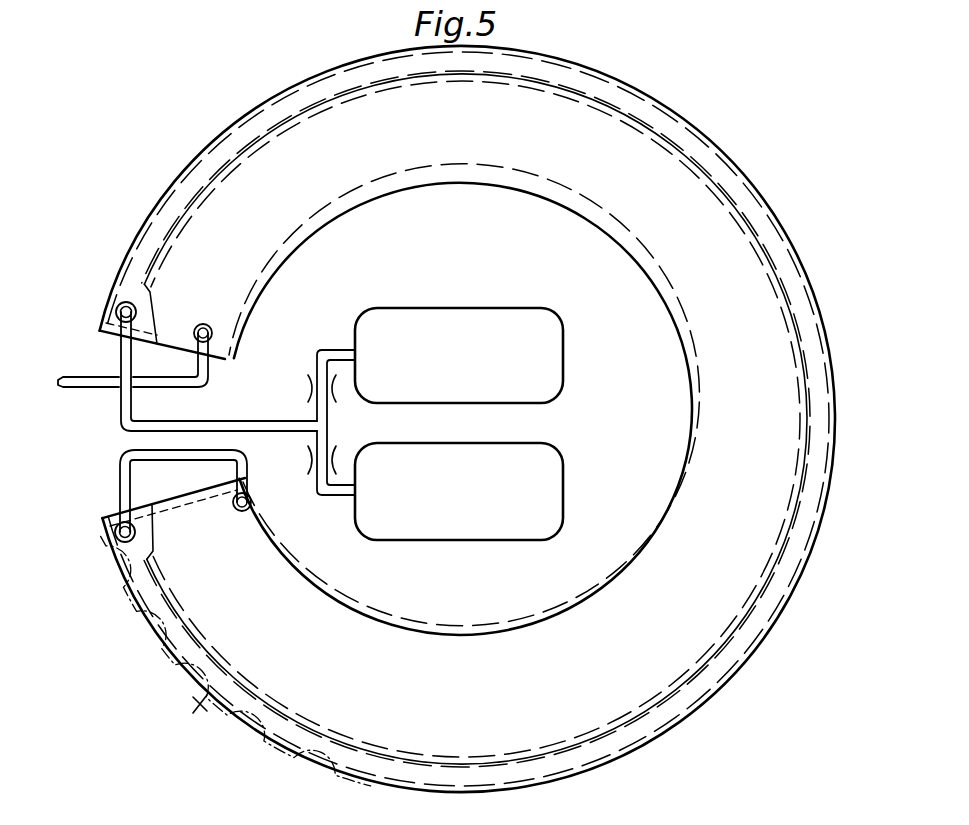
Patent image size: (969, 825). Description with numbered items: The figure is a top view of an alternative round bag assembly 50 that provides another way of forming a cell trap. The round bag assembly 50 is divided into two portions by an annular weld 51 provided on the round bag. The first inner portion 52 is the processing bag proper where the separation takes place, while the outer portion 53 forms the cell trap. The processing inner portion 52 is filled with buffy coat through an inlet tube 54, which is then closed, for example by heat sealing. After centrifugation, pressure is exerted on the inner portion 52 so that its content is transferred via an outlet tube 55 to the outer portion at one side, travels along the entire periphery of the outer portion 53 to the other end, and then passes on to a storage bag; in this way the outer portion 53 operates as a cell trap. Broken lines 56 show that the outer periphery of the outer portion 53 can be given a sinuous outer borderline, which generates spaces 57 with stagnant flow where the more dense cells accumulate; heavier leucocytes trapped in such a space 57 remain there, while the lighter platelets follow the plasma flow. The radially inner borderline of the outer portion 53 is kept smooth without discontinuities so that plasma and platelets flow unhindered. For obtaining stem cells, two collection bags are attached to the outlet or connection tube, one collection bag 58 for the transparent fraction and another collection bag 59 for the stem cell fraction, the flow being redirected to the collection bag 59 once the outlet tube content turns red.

The round bag assembly 50 is at (172, 135).
The annular weld 51 is at (792, 258).
The inner portion 52 is at (752, 543).
The outer portion 53 is at (740, 634).
The inlet tube 54 is at (82, 378).
The outlet tube 55 is at (122, 478).
The broken lines 56 is at (97, 595).
The spaces 57 is at (193, 705).
The collection bag 58 is at (563, 361).
The collection bag 59 is at (563, 494).